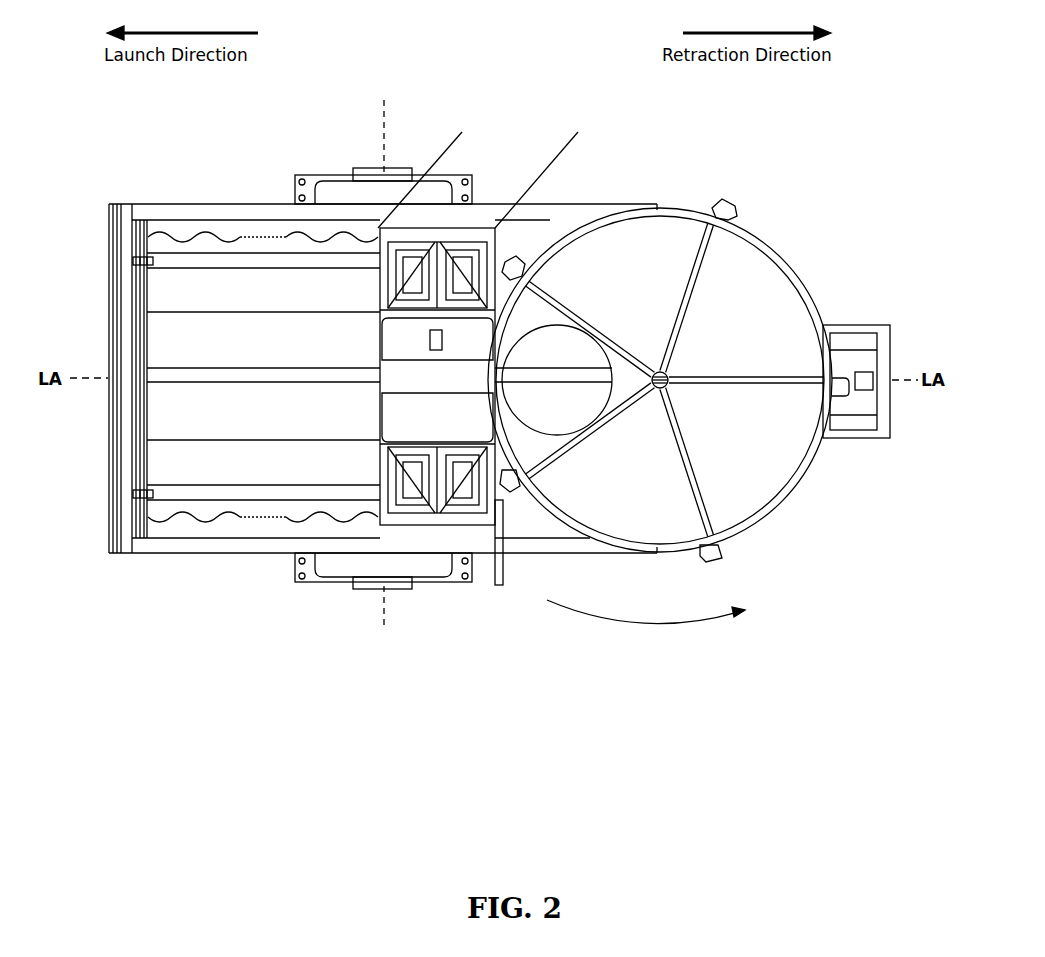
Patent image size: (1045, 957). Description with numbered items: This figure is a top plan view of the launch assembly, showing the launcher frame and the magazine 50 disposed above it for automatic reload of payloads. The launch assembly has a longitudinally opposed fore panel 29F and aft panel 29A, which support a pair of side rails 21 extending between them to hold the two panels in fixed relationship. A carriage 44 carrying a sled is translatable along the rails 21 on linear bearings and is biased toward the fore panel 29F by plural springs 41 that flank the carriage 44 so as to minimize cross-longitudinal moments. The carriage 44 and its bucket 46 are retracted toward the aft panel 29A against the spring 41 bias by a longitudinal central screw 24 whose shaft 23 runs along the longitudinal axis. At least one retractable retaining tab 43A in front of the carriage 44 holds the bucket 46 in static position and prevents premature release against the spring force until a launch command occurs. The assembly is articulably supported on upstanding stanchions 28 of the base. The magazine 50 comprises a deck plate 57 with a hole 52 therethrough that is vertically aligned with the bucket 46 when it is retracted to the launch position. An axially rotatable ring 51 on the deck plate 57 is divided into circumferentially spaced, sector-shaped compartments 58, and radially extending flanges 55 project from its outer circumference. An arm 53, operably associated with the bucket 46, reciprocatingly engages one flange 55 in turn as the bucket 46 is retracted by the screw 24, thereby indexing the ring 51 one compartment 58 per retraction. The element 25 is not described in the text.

The rail 21 is at (220, 288).
The shaft 23 is at (255, 262).
The screw 24 is at (245, 378).
The end plate 25 is at (118, 428).
The upstanding stanchion 28 is at (330, 197).
The aft panel 29A is at (652, 212).
The fore panel 29F is at (122, 215).
The spring 41 is at (192, 243).
The retaining tab 43A is at (363, 260).
The carriage 44 is at (560, 146).
The bucket 46 is at (380, 338).
The magazine 50 is at (780, 583).
The ring 51 is at (770, 232).
The hole 52 is at (557, 380).
The arm 53 is at (492, 575).
The flange 55 is at (736, 200).
The deck plate 57 is at (770, 300).
The compartment 58 is at (790, 330).